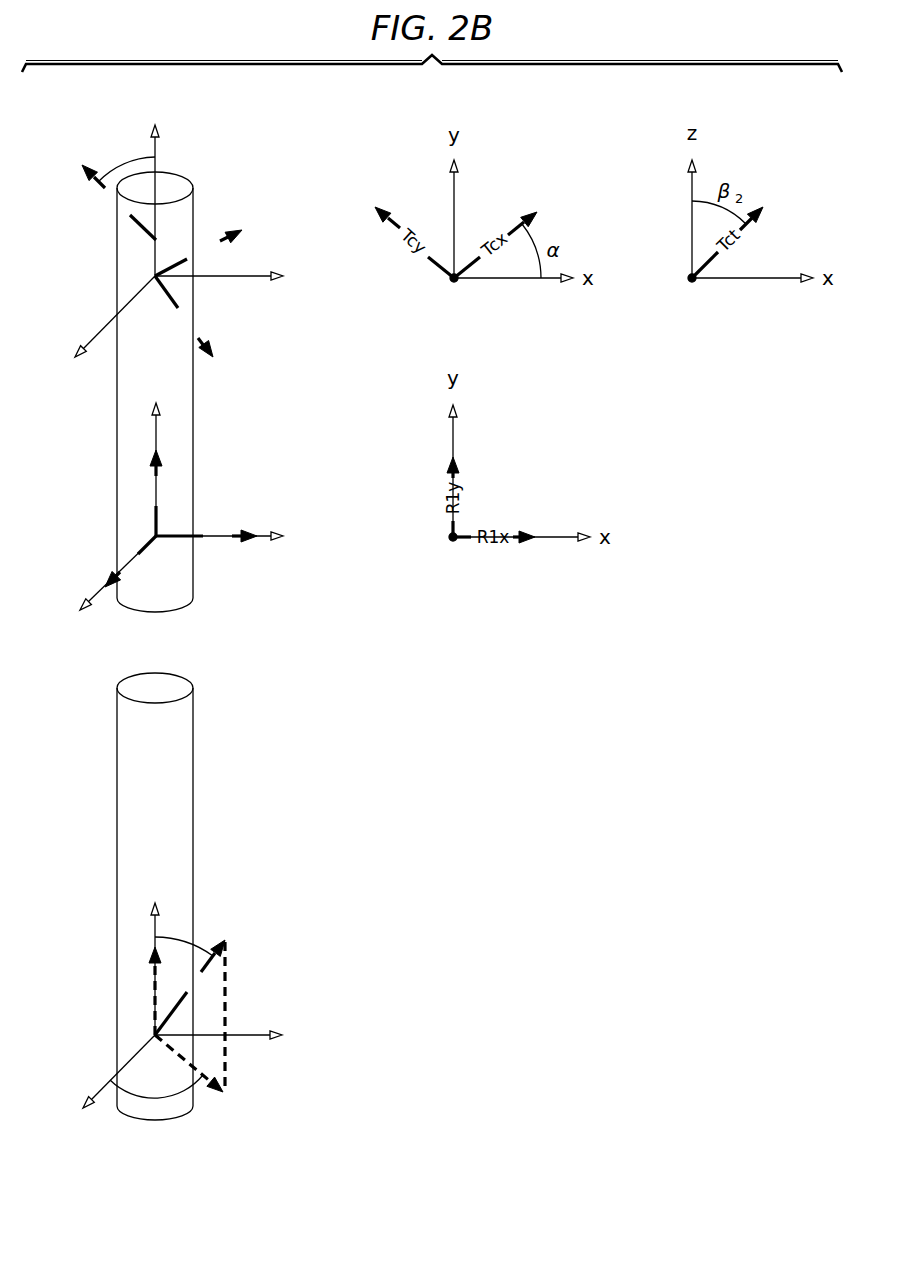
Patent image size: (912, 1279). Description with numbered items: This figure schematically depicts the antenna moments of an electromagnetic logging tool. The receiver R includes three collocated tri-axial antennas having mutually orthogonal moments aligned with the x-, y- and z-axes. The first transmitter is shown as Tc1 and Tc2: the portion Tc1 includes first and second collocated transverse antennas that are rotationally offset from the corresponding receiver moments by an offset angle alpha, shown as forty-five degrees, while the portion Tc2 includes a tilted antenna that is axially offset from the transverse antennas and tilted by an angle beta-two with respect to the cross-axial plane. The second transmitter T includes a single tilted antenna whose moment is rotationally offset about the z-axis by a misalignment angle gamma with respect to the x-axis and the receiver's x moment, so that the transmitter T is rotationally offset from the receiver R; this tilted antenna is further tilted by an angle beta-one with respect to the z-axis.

The first transmitter antenna set Tc1 is at (162, 238).
The tilted transmitter antenna portion Tc2 is at (98, 189).
The receiver R is at (177, 505).
The transmitter T is at (176, 1005).